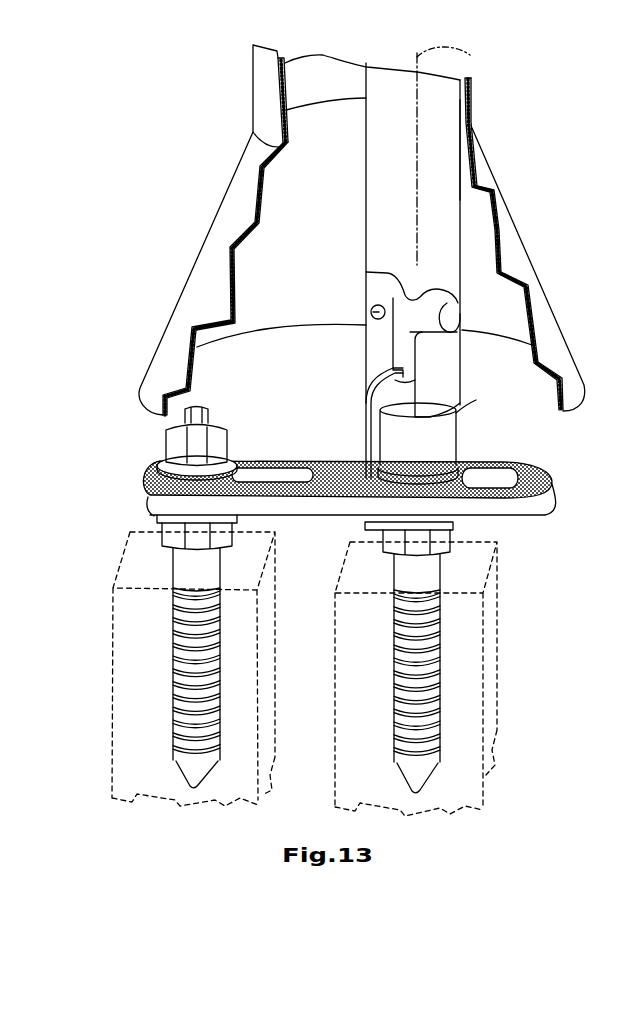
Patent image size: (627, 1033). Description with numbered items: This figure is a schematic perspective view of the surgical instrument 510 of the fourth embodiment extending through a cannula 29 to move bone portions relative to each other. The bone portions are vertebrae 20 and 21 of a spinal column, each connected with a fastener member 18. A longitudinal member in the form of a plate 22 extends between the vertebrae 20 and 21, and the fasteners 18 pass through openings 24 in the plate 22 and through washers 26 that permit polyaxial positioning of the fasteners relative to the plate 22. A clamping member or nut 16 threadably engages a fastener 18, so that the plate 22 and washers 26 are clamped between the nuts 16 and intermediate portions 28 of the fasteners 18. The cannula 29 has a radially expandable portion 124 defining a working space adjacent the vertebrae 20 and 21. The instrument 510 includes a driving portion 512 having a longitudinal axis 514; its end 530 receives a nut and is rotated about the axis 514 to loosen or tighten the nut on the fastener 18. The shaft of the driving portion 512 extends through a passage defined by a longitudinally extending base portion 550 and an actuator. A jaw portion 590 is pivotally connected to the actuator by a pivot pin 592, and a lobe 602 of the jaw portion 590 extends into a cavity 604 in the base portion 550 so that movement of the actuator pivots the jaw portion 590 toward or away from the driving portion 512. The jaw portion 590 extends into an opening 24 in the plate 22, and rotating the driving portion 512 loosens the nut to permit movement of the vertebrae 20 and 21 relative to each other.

The clamping member 16 is at (182, 448).
The fastener member 18 is at (180, 572).
The vertebra 20 is at (487, 732).
The vertebra 21 is at (128, 757).
The plate 22 is at (545, 499).
The opening 24 is at (262, 473).
The washer 26 is at (180, 478).
The intermediate portion 28 is at (177, 535).
The cannula 29 is at (268, 100).
The radially expandable portion 124 is at (222, 230).
The surgical instrument 510 is at (356, 165).
The driving portion 512 is at (460, 435).
The longitudinal axis 514 is at (468, 54).
The end 530 is at (458, 425).
The base portion 550 is at (458, 161).
The jaw portion 590 is at (356, 384).
The pivot pin 592 is at (371, 311).
The lobe 602 is at (447, 310).
The cavity 604 is at (420, 292).